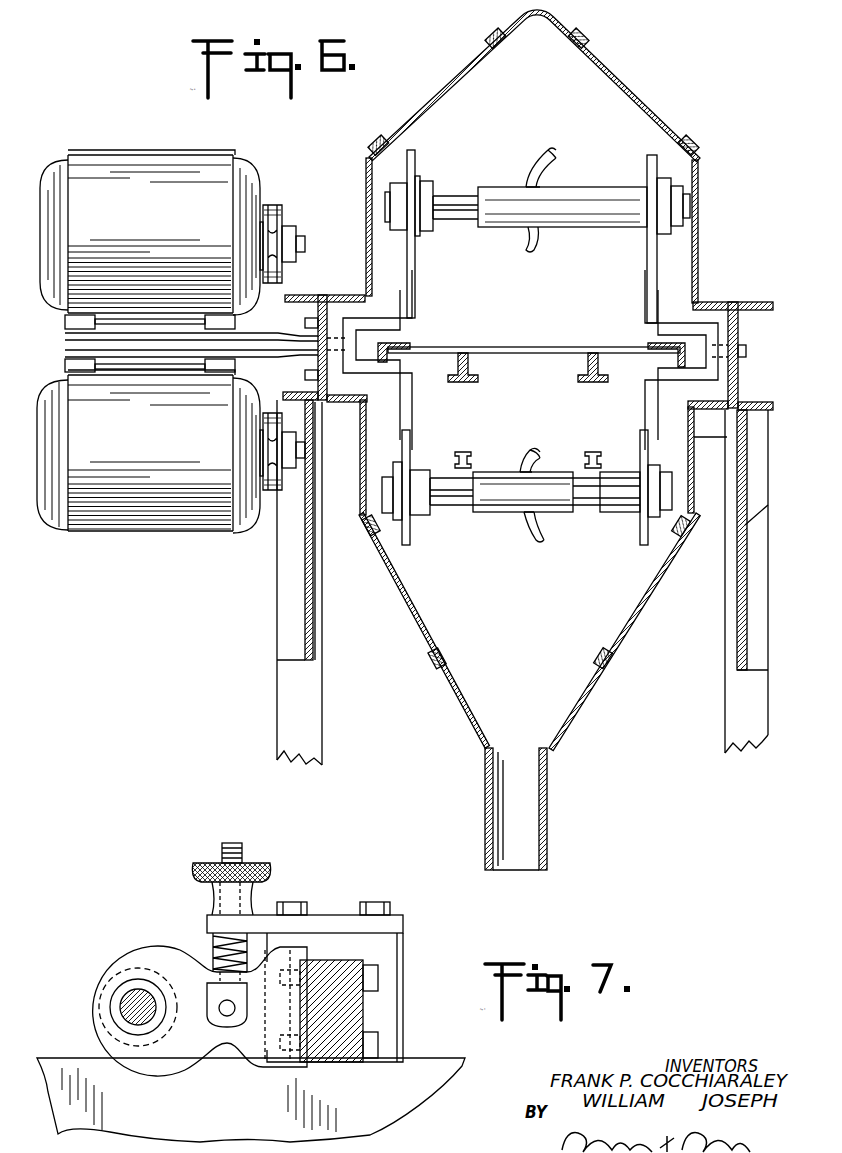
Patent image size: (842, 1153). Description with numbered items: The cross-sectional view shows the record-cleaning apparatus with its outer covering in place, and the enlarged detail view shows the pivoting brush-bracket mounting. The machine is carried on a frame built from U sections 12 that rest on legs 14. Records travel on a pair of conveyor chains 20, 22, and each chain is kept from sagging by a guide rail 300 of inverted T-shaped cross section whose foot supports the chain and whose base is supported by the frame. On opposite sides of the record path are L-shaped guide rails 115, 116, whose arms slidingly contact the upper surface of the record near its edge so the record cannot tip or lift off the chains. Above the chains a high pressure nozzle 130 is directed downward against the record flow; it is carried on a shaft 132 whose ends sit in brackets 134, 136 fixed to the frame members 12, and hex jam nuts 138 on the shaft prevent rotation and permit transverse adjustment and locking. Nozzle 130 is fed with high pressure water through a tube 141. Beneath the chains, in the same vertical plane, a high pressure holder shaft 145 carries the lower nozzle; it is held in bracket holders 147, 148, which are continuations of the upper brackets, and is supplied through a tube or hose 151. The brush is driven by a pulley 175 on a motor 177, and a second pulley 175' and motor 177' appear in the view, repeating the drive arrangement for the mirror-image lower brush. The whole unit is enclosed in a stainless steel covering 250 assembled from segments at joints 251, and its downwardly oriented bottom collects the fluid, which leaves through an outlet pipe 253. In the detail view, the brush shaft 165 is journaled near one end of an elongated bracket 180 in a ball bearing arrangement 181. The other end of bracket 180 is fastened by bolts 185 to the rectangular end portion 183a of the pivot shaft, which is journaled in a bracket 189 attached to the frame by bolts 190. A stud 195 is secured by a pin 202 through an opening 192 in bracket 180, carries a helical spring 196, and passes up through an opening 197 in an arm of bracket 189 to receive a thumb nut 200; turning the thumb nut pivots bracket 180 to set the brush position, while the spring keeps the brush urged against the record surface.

In FIG. 6, the U section 12 is at (292, 298).
In FIG. 6, the leg 14 is at (277, 700).
In FIG. 6, the conveyor chain 20 is at (599, 458).
In FIG. 6, the conveyor chain 22 is at (470, 455).
In FIG. 6, the guide rail 115 is at (388, 346).
In FIG. 6, the guide rail 116 is at (684, 362).
In FIG. 6, the high pressure nozzle 130 is at (528, 244).
In FIG. 6, the shaft 132 is at (597, 190).
In FIG. 6, the bracket 134 is at (421, 157).
In FIG. 6, the bracket 136 is at (645, 160).
In FIG. 6, the hex jam nut 138 is at (432, 187).
In FIG. 6, the tube 141 is at (542, 160).
In FIG. 6, the high pressure holder shaft 145 is at (481, 515).
In FIG. 6, the bracket holder 147 is at (407, 546).
In FIG. 6, the bracket holder 148 is at (643, 546).
In FIG. 6, the tube or hose 151 is at (530, 540).
In FIG. 6, the pulley 175 is at (282, 219).
In FIG. 6, the pulley 175' is at (276, 479).
In FIG. 6, the motor 177 is at (150, 216).
In FIG. 6, the motor 177' is at (148, 467).
In FIG. 6, the covering 250 is at (620, 81).
In FIG. 6, the joint 251 is at (492, 32).
In FIG. 6, the outlet pipe 253 is at (548, 806).
In FIG. 6, the guide rail 300 is at (456, 385).
In FIG. 7, the shaft 165 is at (122, 1005).
In FIG. 7, the bracket 180 is at (125, 946).
In FIG. 7, the ball bearing arrangement 181 is at (116, 985).
In FIG. 7, the rectangular cross-sectional portion 183a is at (380, 1131).
In FIG. 7, the bolt 185 is at (380, 1040).
In FIG. 7, the bracket 189 is at (405, 929).
In FIG. 7, the bolt 190 is at (373, 902).
In FIG. 7, the opening 192 is at (220, 1020).
In FIG. 7, the stud 195 is at (232, 843).
In FIG. 7, the helical spring 196 is at (212, 948).
In FIG. 7, the opening 197 is at (210, 913).
In FIG. 7, the thumb nut 200 is at (266, 868).
In FIG. 7, the pin 202 is at (230, 1018).